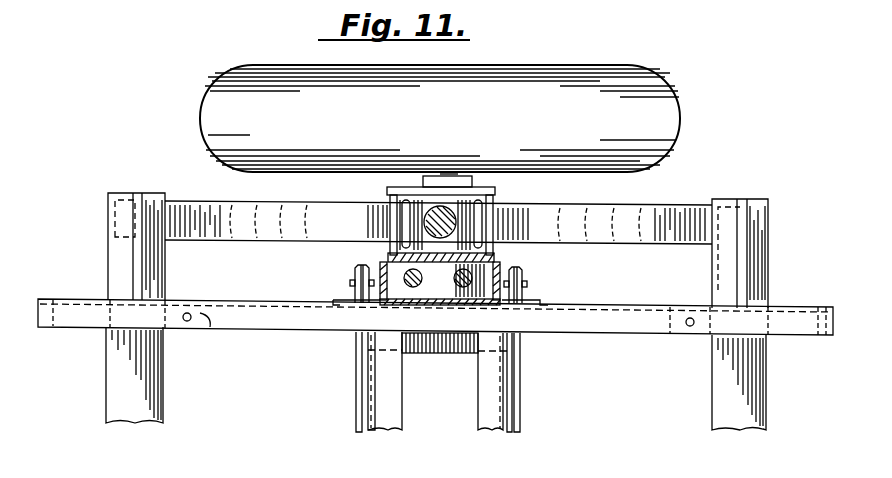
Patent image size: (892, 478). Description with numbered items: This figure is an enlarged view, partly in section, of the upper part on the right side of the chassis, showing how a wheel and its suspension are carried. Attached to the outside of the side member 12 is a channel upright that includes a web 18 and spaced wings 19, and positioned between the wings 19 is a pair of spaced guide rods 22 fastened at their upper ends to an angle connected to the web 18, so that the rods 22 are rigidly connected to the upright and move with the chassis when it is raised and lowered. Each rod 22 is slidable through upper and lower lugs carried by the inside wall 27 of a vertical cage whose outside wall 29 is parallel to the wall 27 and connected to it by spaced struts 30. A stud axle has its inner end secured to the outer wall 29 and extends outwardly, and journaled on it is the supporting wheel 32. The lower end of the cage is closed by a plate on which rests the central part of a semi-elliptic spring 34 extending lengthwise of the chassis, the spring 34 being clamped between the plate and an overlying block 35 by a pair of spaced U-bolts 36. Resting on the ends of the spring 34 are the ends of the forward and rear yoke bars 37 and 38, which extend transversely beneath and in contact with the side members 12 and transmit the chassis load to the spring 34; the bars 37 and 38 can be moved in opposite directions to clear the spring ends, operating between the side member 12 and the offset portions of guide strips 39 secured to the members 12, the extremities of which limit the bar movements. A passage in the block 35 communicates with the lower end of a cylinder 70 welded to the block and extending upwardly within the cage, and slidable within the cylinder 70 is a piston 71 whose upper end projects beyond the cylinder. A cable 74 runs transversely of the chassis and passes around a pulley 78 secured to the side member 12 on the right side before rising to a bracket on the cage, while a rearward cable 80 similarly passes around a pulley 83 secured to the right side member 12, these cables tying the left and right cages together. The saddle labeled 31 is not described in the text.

The side member 12 is at (250, 298).
The web 18 is at (427, 345).
The wings 19 is at (378, 263).
The guide rods 22 is at (454, 276).
The inside wall 27 is at (502, 264).
The outside wall 29 is at (496, 190).
The struts 30 is at (387, 198).
The saddle 31 is at (468, 176).
The supporting wheel 32 is at (312, 66).
The semi-elliptic spring 34 is at (672, 207).
The block 35 is at (414, 208).
The U-bolts 36 is at (404, 222).
The forward yoke bar 37 is at (160, 376).
The rear yoke bar 38 is at (712, 383).
The guide strips 39 is at (212, 325).
The cylinder 70 is at (432, 210).
The piston 71 is at (443, 210).
The cable 74 is at (357, 380).
The pulley 78 is at (352, 268).
The cable 80 is at (520, 362).
The pulley 83 is at (524, 272).